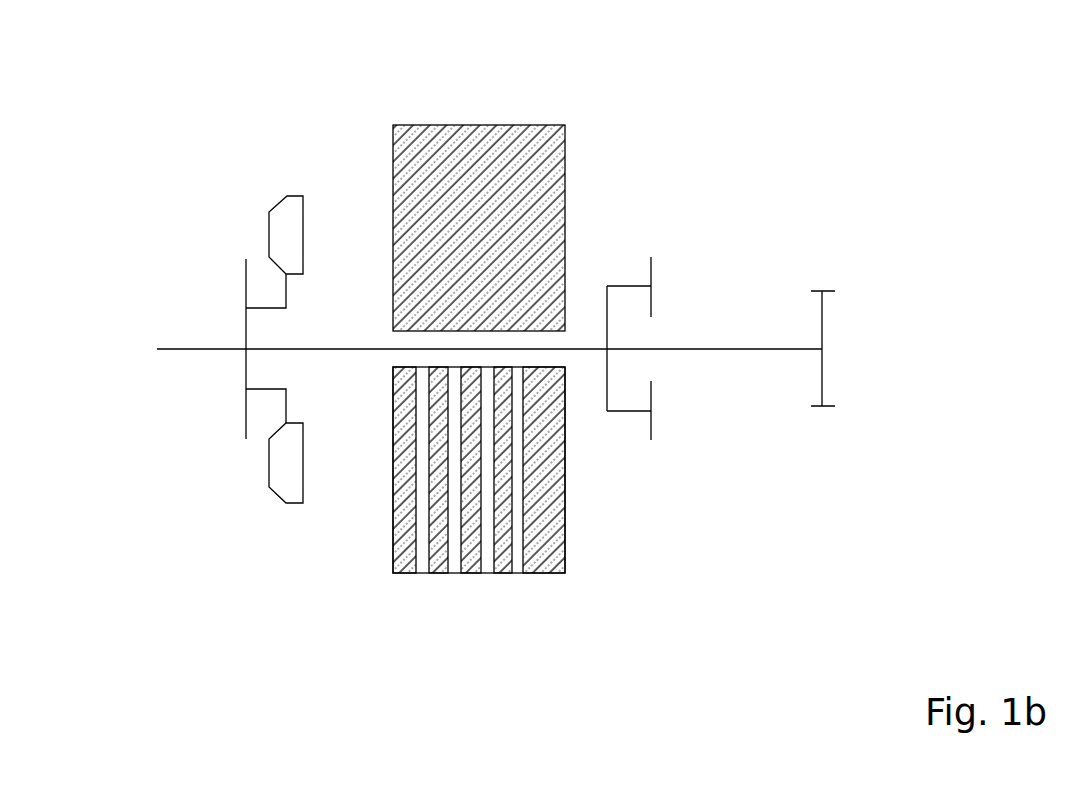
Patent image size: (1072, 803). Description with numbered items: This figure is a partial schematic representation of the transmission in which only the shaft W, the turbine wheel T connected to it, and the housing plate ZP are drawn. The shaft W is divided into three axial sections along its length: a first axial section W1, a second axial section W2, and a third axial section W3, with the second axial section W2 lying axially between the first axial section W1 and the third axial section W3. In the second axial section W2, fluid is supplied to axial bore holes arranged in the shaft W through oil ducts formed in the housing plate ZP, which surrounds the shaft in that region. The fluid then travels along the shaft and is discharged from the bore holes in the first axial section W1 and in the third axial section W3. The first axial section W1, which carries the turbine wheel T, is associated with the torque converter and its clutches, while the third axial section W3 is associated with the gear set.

The turbine wheel T is at (271, 191).
The housing plate ZP is at (507, 150).
The shaft W is at (762, 349).
The first axial section W1 is at (273, 355).
The second axial section W2 is at (479, 355).
The third axial section W3 is at (837, 590).